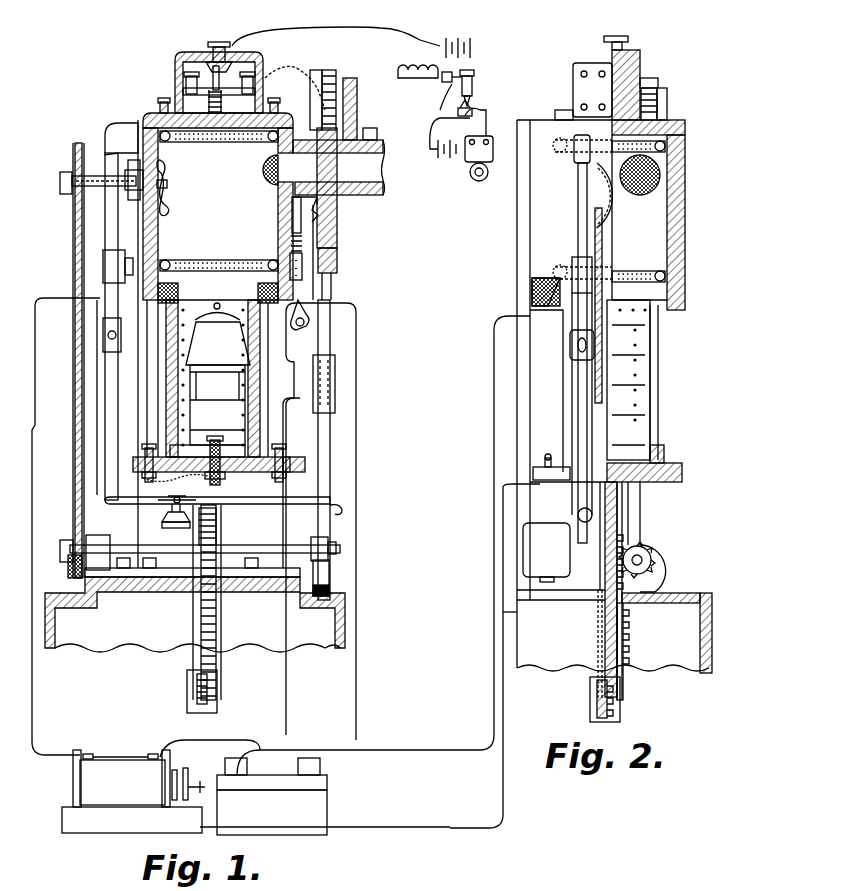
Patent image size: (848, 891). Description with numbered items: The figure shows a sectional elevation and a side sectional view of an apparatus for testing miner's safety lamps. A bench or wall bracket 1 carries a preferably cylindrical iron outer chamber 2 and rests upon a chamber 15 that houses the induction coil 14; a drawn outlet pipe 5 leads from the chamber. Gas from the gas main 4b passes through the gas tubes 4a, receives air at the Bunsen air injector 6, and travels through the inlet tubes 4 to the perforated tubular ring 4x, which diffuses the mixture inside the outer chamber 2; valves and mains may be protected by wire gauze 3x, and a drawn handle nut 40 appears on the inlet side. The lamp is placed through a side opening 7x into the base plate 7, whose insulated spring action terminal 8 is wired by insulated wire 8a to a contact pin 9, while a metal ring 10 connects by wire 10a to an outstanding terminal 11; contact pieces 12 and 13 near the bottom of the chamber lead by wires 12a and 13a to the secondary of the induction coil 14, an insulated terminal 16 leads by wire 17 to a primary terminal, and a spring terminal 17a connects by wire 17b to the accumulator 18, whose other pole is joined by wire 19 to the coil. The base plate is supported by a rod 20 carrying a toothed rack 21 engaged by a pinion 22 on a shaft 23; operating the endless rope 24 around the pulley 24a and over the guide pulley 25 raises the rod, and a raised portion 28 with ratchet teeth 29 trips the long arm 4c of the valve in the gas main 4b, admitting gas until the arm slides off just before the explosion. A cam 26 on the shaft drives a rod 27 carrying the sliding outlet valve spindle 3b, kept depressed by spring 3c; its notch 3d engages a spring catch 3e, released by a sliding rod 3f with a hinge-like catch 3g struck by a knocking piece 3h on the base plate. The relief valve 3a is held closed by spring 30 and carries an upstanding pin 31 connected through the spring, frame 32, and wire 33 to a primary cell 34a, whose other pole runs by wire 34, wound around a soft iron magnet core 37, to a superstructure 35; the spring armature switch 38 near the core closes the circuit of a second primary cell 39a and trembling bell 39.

In FIG. 1, the bench bracket or wall bracket 1 is at (125, 182).
In FIG. 2, the bench bracket or wall bracket 1 is at (568, 567).
In FIG. 1, the outer chamber 2 is at (160, 232).
In FIG. 2, the outer chamber 2 is at (685, 236).
In FIG. 1, the relief valve 3a is at (232, 143).
In FIG. 1, the sliding outlet valve spindle or plate 3b is at (337, 238).
In FIG. 1, the spring 3c is at (322, 95).
In FIG. 2, the spring 3c is at (657, 110).
In FIG. 1, the notch 3d is at (337, 258).
In FIG. 1, the spring catch 3e is at (305, 218).
In FIG. 1, the sliding rod 3f is at (332, 282).
In FIG. 1, the spring hinge-like catch 3g is at (297, 330).
In FIG. 1, the knocking piece 3h is at (285, 462).
In FIG. 1, the perforated metal sheets or wire gauze 3x is at (268, 171).
In FIG. 2, the perforated metal sheets or wire gauze 3x is at (660, 176).
In FIG. 1, the gas mixture inlet tubes 4 is at (112, 130).
In FIG. 2, the gas mixture inlet tubes 4 is at (572, 158).
In FIG. 1, the gas tubes 4a is at (105, 233).
In FIG. 2, the gas tubes 4a is at (578, 231).
In FIG. 1, the gas main 4b is at (335, 505).
In FIG. 1, the long arm 4c is at (190, 503).
In FIG. 1, the tubular ring 4x is at (178, 146).
In FIG. 2, the tubular ring 4x is at (666, 147).
In FIG. 1, the outlet pipe 5 is at (339, 161).
In FIG. 1, the Bunsen air injector 6 is at (103, 331).
In FIG. 1, the base plate 7 is at (166, 376).
In FIG. 2, the base plate 7 is at (565, 371).
In FIG. 2, the side opening 7x is at (650, 375).
In FIG. 1, the insulated spring action terminal 8 is at (218, 478).
In FIG. 1, the insulated wire 8a is at (228, 484).
In FIG. 1, the insulated contact pin 9 is at (277, 452).
In FIG. 1, the metal ring 10 is at (168, 455).
In FIG. 1, the wire 10a is at (165, 478).
In FIG. 1, the outstanding terminal 11 is at (145, 462).
In FIG. 1, the insulated contact piece 12 is at (158, 305).
In FIG. 1, the wire 12a is at (35, 386).
In FIG. 1, the insulated contact piece 13 is at (262, 305).
In FIG. 1, the wire 13a is at (357, 371).
In FIG. 1, the induction coil 14 is at (133, 791).
In FIG. 1, the chamber 15 is at (302, 650).
In FIG. 2, the chamber 15 is at (554, 668).
In FIG. 2, the outstanding insulated terminal 16 is at (547, 485).
In FIG. 1, the wire 17 is at (353, 827).
In FIG. 2, the wire 17 is at (505, 612).
In FIG. 2, the spring terminal 17a is at (545, 306).
In FIG. 2, the wire 17b is at (494, 421).
In FIG. 1, the accumulator 18 is at (327, 795).
In FIG. 1, the wire 19 is at (254, 795).
In FIG. 1, the rod 20 is at (212, 606).
In FIG. 2, the rod 20 is at (607, 470).
In FIG. 1, the toothed rack 21 is at (212, 628).
In FIG. 2, the toothed rack 21 is at (628, 620).
In FIG. 1, the pinion 22 is at (216, 545).
In FIG. 2, the pinion 22 is at (648, 552).
In FIG. 1, the shaft 23 is at (332, 540).
In FIG. 1, the endless rope 24 is at (103, 265).
In FIG. 2, the endless rope 24 is at (620, 235).
In FIG. 1, the pulley 24a is at (64, 540).
In FIG. 1, the guide pulley 25 is at (73, 155).
In FIG. 2, the guide pulley 25 is at (595, 201).
In FIG. 1, the cam 26 is at (329, 578).
In FIG. 2, the cam 26 is at (661, 580).
In FIG. 1, the rod 27 is at (328, 425).
In FIG. 2, the rod 27 is at (641, 511).
In FIG. 1, the raised portion 28 is at (195, 675).
In FIG. 1, the ratchet teeth 29 is at (190, 613).
In FIG. 1, the spring 30 is at (208, 102).
In FIG. 1, the upstanding pin 31 is at (186, 78).
In FIG. 1, the frame 32 is at (158, 110).
In FIG. 1, the wire 33 is at (295, 81).
In FIG. 2, the wire 33 is at (573, 88).
In FIG. 1, the wire 34 is at (290, 30).
In FIG. 2, the wire 34 is at (585, 60).
In FIG. 1, the primary cell 34a is at (444, 48).
In FIG. 1, the superstructure 35 is at (175, 58).
In FIG. 1, the soft iron magnet core 37 is at (400, 78).
In FIG. 1, the spark plug switch 38 is at (440, 92).
In FIG. 1, the trembling bell 39 is at (478, 182).
In FIG. 1, the second primary cell 39a is at (440, 160).
In FIG. 1, the handle nut 40 is at (166, 175).